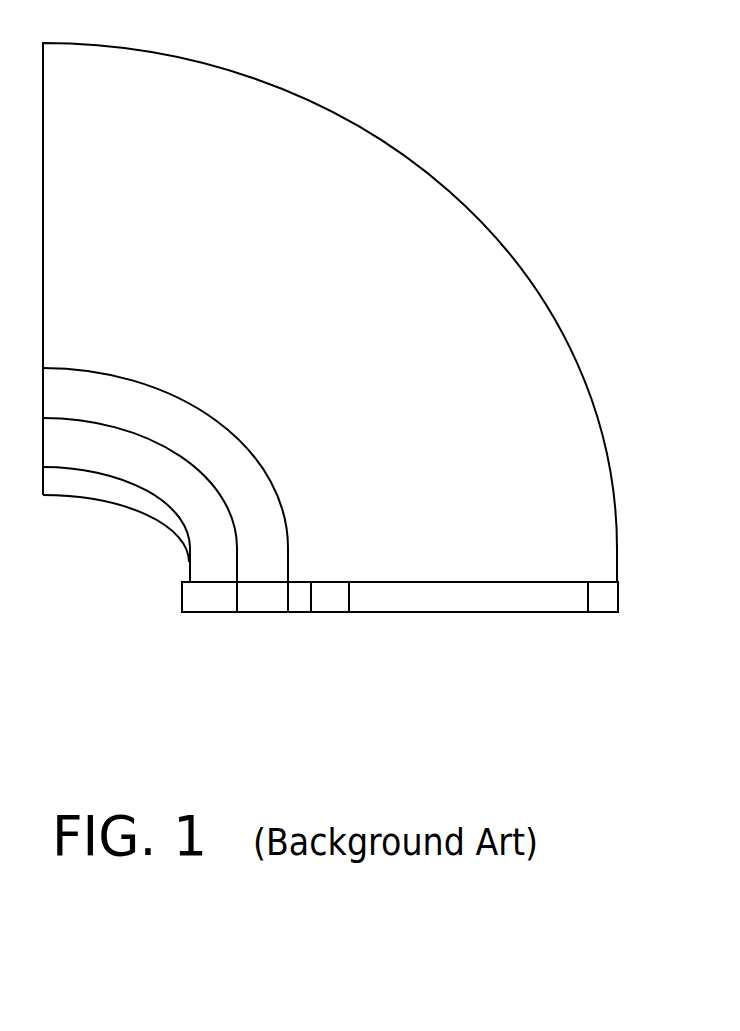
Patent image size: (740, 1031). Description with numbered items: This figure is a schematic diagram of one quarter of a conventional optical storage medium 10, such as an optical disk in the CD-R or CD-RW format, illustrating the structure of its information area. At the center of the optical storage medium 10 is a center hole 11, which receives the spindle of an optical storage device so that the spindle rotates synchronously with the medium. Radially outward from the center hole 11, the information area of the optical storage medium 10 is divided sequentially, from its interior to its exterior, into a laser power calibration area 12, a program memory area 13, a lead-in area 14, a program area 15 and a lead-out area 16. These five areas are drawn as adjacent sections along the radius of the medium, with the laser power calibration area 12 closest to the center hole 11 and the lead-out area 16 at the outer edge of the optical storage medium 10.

The optical storage medium 10 is at (526, 147).
The center hole 11 is at (92, 544).
The laser power calibration area 12 is at (248, 600).
The program memory area 13 is at (300, 602).
The lead-in area 14 is at (340, 600).
The program area 15 is at (482, 602).
The lead-out area 16 is at (603, 600).